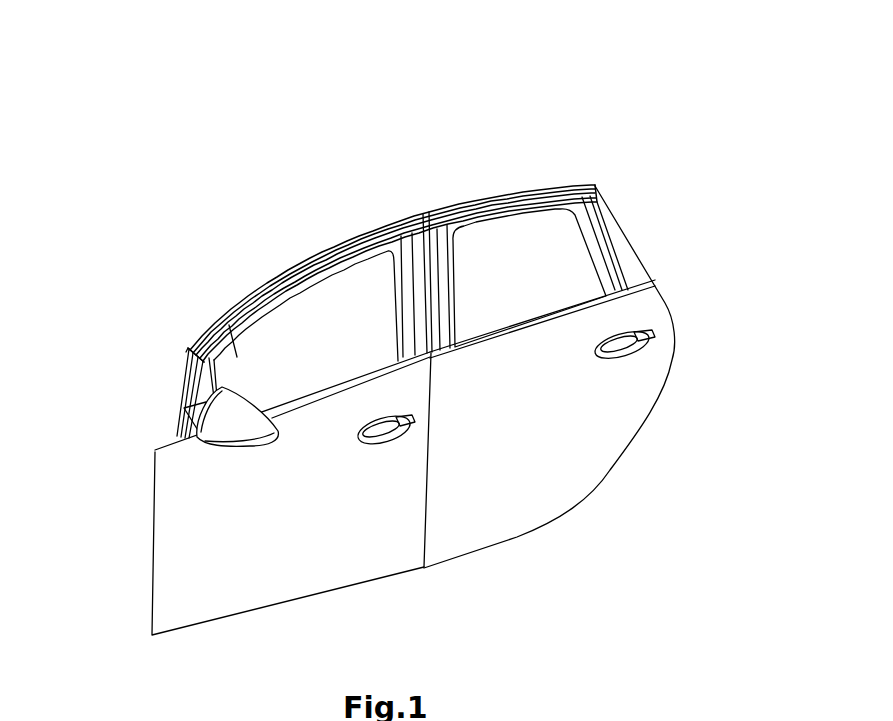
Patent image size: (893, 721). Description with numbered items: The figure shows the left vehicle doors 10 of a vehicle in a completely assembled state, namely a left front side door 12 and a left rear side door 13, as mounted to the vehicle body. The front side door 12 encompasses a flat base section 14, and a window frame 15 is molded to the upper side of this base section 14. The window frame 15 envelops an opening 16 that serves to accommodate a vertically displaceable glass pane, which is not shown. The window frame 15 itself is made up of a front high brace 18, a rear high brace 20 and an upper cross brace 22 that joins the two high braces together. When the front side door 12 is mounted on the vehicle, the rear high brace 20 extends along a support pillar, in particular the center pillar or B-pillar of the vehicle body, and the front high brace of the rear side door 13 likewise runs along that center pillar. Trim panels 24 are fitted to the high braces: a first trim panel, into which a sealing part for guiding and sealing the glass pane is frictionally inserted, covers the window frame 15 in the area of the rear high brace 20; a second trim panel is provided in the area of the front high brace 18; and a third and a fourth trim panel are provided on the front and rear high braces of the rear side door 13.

The left vehicle doors 10 is at (703, 95).
The left front side door 12 is at (360, 270).
The left rear side door 13 is at (557, 234).
The flat base section 14 is at (323, 588).
The window frame 15 is at (333, 311).
The opening 16 is at (212, 367).
The front high brace 18 is at (183, 383).
The rear high brace 20 is at (395, 303).
The upper cross brace 22 is at (270, 277).
The trim panel 24 is at (393, 250).